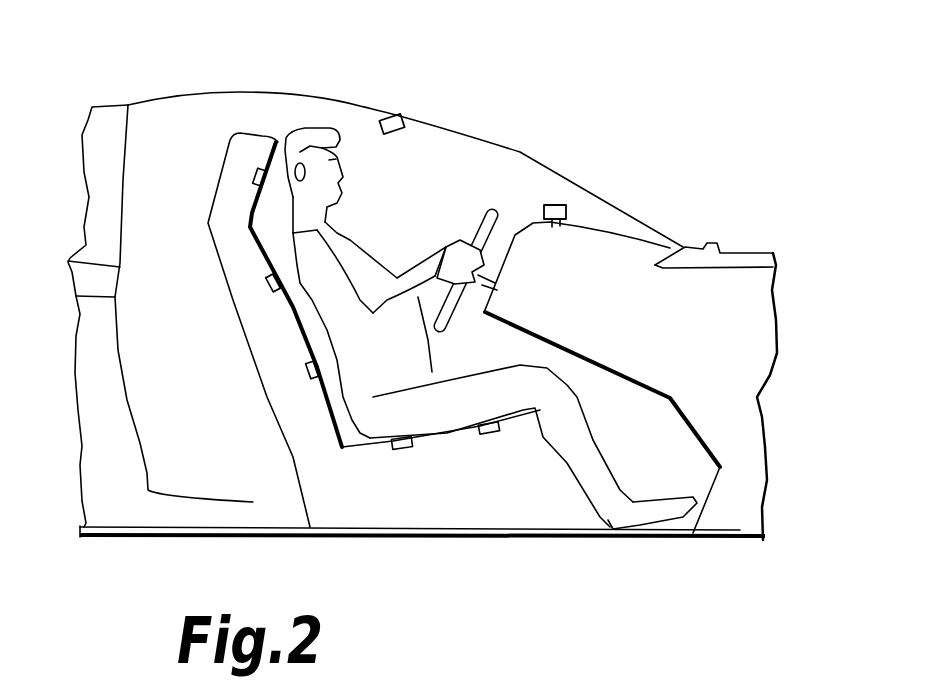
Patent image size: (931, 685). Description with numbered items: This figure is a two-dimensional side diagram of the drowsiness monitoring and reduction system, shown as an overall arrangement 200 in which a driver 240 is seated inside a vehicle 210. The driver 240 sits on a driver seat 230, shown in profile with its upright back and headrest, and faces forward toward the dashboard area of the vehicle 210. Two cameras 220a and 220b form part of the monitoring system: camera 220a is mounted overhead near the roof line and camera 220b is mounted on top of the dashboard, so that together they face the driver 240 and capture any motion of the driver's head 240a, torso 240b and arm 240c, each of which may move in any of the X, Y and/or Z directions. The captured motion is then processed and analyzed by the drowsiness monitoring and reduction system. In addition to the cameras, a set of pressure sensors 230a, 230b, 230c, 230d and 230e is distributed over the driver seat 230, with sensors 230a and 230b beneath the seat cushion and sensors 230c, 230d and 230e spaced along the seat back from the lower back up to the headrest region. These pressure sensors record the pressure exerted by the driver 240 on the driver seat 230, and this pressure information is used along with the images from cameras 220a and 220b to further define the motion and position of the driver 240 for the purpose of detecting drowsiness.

The vehicle interior 200 is at (467, 547).
The vehicle 210 is at (663, 323).
The camera 220a is at (395, 116).
The camera 220b is at (557, 204).
The driver seat 230 is at (240, 341).
The pressure sensor 230a is at (490, 436).
The pressure sensor 230b is at (394, 450).
The pressure sensor 230c is at (308, 368).
The pressure sensor 230d is at (268, 278).
The pressure sensor 230e is at (255, 178).
The driver 240 is at (378, 245).
The head 240a is at (313, 138).
The torso 240b is at (351, 239).
The arm 240c is at (420, 300).